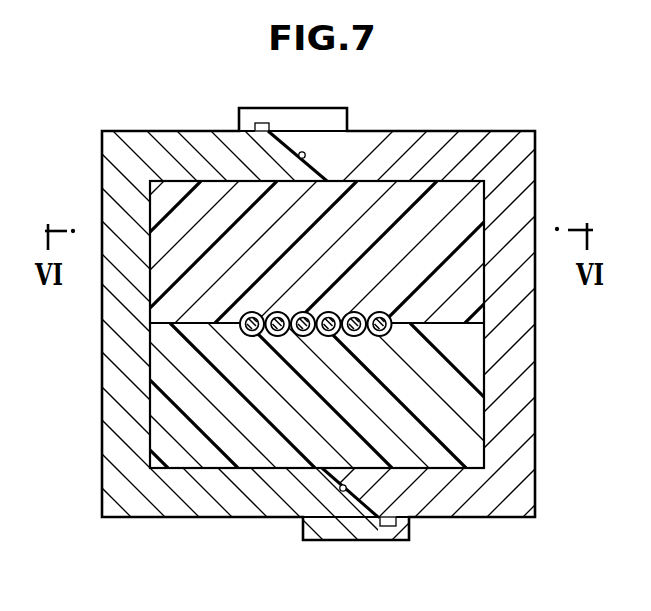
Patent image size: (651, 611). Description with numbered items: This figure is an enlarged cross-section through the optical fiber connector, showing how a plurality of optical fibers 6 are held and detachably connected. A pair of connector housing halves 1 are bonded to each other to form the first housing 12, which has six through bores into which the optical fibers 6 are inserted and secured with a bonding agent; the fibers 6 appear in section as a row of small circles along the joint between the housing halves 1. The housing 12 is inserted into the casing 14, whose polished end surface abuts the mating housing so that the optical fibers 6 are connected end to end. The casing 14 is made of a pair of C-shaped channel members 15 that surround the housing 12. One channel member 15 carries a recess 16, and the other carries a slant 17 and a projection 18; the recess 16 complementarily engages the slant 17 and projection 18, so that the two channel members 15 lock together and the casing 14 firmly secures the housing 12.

The connector housing half 1 is at (188, 188).
The optical fiber 6 is at (383, 336).
The first housing 12 is at (489, 385).
The casing 14 is at (523, 126).
The C-shaped channel member 15 is at (133, 140).
The recess 16 is at (304, 152).
The slant 17 is at (327, 164).
The projection 18 is at (263, 124).